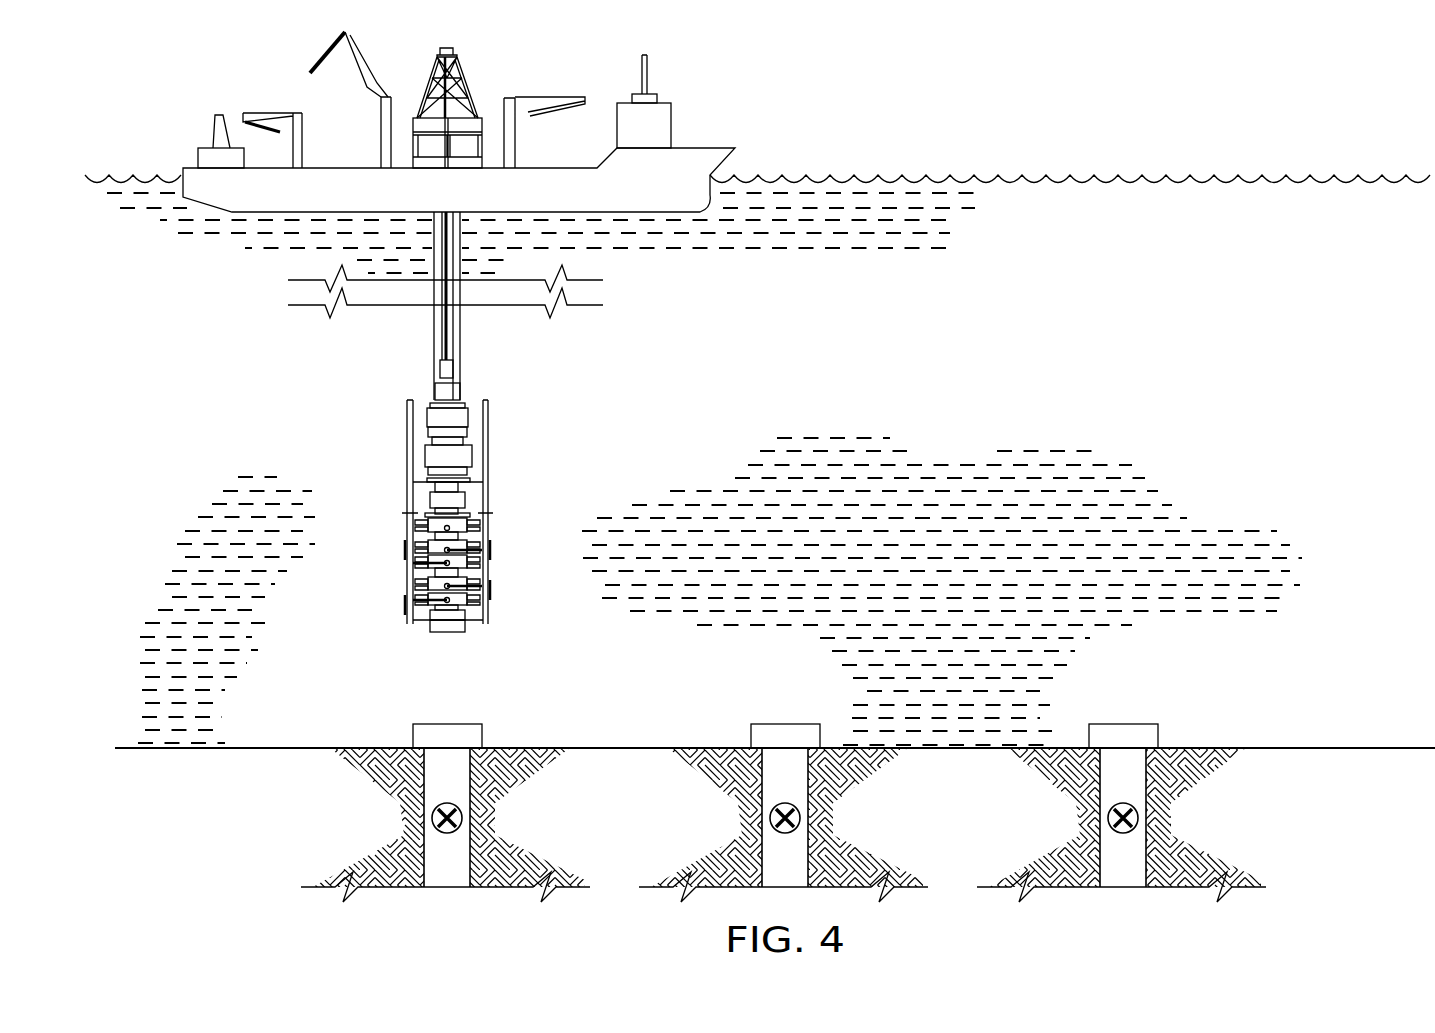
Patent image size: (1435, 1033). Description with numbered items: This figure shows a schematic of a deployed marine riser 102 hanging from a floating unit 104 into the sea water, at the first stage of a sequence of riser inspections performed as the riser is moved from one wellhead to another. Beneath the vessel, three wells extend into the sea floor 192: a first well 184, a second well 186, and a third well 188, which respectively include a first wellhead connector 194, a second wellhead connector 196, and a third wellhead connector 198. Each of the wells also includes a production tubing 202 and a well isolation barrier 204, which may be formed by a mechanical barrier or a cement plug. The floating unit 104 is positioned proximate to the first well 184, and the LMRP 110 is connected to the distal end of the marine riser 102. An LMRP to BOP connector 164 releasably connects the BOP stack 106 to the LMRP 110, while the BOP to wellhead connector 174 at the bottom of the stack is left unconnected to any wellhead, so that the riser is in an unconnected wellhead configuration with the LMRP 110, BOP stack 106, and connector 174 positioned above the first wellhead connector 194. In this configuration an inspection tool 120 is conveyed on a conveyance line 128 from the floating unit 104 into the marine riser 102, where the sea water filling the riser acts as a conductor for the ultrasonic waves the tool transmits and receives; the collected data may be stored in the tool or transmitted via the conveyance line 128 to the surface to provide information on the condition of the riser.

The floating unit 104 is at (706, 146).
The marine riser 102 is at (435, 340).
The conveyance line 128 is at (448, 333).
The inspection tool 120 is at (442, 368).
The LMRP 110 is at (393, 400).
The LMRP to BOP connector 164 is at (458, 498).
The BOP stack 106 is at (393, 515).
The BOP to wellhead connector 174 is at (458, 616).
The sea floor 192 is at (265, 748).
The first wellhead connector 194 is at (413, 736).
The second wellhead connector 196 is at (751, 736).
The third wellhead connector 198 is at (1150, 736).
The first well 184 is at (318, 782).
The second well 186 is at (656, 782).
The third well 188 is at (1255, 781).
The production tubing 202 is at (430, 840).
The well isolation barrier 204 is at (470, 790).